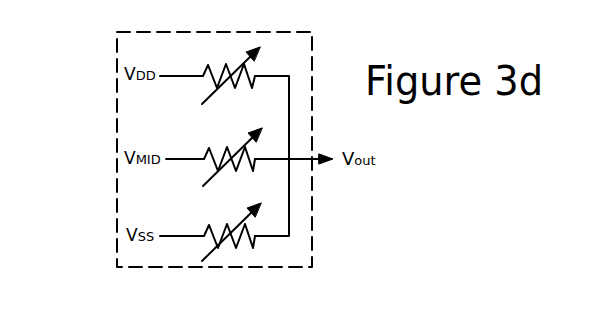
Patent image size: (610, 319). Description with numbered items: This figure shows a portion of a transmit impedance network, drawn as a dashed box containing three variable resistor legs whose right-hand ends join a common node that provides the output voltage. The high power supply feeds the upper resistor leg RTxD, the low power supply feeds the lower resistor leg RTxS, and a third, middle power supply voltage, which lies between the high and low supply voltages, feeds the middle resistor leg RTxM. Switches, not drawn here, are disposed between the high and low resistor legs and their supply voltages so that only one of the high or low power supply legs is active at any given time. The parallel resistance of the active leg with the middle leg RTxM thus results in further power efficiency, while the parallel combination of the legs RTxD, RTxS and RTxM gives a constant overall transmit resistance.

The high power supply resistor leg RTxD is at (231, 68).
The middle resistor leg RTxM is at (232, 151).
The low power supply resistor leg RTxS is at (231, 226).